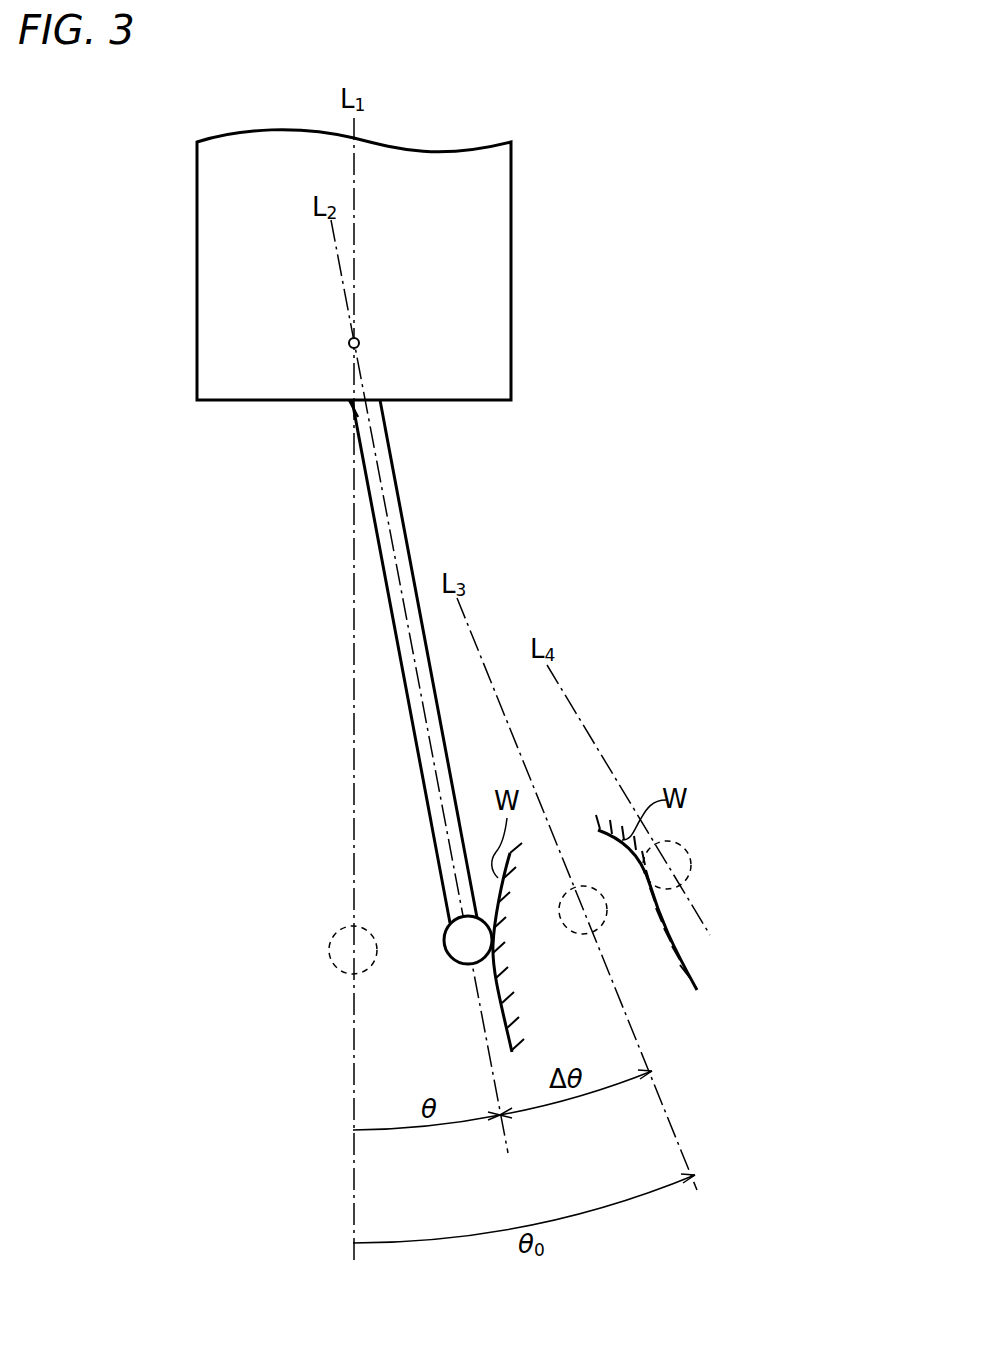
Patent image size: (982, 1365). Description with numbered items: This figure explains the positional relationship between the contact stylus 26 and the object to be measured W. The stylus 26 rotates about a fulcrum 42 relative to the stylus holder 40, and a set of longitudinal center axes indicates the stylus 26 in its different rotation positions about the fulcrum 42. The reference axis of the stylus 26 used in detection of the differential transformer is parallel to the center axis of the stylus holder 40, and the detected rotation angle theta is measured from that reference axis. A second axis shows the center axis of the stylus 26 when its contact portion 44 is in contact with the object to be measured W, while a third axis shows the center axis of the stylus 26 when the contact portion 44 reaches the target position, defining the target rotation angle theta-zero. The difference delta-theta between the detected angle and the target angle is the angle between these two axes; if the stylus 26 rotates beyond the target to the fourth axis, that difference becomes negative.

The stylus 26 is at (406, 710).
The stylus holder 40 is at (511, 256).
The pivot 42 is at (360, 340).
The contact portion 44 is at (460, 965).